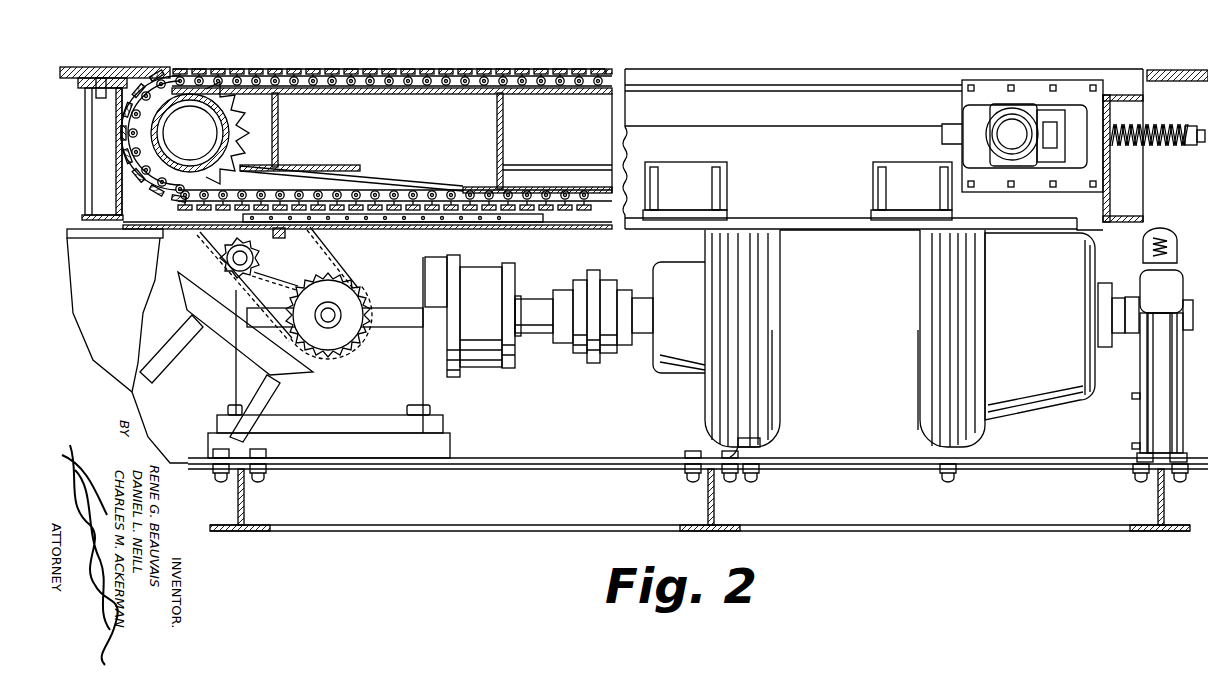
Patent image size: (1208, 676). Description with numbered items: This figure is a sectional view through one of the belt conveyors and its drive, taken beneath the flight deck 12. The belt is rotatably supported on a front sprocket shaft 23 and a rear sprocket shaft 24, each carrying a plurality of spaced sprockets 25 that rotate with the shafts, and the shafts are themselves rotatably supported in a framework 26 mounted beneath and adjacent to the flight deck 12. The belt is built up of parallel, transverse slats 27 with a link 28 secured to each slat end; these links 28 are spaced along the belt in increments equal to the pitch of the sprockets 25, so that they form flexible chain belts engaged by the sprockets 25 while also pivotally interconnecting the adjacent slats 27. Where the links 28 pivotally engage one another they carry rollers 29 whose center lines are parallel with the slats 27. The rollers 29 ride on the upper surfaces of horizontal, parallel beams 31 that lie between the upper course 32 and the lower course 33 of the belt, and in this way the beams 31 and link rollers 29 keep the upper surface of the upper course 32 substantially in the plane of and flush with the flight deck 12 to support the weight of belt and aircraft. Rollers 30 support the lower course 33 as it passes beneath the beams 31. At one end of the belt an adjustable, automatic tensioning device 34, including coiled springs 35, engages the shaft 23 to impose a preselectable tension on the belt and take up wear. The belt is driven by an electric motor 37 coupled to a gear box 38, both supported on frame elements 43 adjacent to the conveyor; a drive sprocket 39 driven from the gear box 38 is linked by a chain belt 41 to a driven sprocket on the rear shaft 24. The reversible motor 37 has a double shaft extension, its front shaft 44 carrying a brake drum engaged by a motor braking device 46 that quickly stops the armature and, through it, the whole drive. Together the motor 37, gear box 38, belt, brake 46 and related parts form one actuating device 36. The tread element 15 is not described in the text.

The flight deck 12 is at (1177, 69).
The conveyor flight 15 is at (532, 65).
The front sprocket shaft 23 is at (1014, 126).
The rear sprocket shaft 24 is at (192, 101).
The sprockets 25 is at (213, 157).
The framework 26 is at (840, 65).
The transverse slats 27 is at (385, 70).
The links 28 is at (458, 78).
The rollers 29 is at (380, 94).
The rollers 30 is at (406, 211).
The horizontal parallel beams 31 is at (543, 131).
The upper course 32 is at (575, 66).
The lower course 33 is at (560, 212).
The adjustable automatic tensioning device 34 is at (1165, 117).
The coiled springs 35 is at (1162, 148).
The actuating device 36 is at (735, 64).
The electric motor 37 is at (829, 316).
The gear box 38 is at (341, 386).
The drive sprocket 39 is at (351, 329).
The chain belt 41 is at (345, 277).
The frame elements 43 is at (482, 527).
The front shaft 44 is at (1121, 305).
The motor braking device 46 is at (1128, 418).